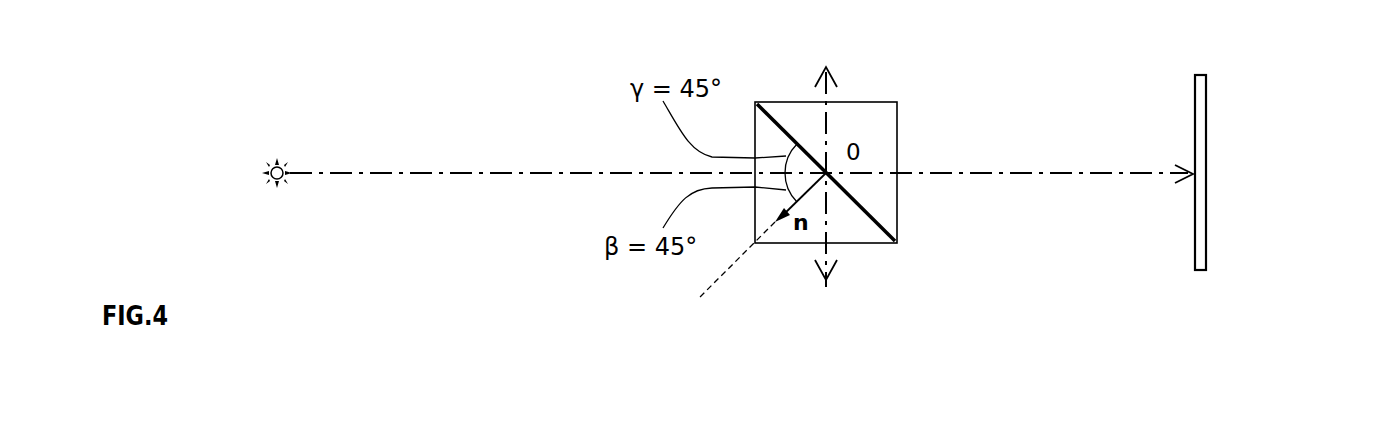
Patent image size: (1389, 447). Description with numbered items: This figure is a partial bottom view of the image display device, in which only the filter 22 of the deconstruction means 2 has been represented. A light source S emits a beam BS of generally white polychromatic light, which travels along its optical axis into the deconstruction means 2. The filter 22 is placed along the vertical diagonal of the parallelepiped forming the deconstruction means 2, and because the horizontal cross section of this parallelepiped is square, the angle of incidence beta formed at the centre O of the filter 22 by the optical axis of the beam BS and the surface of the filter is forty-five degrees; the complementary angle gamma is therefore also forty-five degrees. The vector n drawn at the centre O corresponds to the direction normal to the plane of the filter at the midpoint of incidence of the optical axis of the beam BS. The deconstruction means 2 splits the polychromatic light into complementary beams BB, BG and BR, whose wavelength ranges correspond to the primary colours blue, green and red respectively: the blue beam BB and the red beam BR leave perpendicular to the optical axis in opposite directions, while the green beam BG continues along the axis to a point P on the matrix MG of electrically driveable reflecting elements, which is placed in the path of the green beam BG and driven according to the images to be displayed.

The means for deconstructing the polychromatic light beam 2 is at (933, 100).
The dichroic filter 22 is at (861, 213).
The light source S is at (277, 179).
The polychromatic light beam BS is at (510, 175).
The blue complementary light beam BB is at (830, 67).
The red complementary light beam BR is at (828, 287).
The green complementary light beam BG is at (1085, 175).
The point on mirror P is at (1190, 177).
The matrix of reflecting elements for green MG is at (1205, 118).